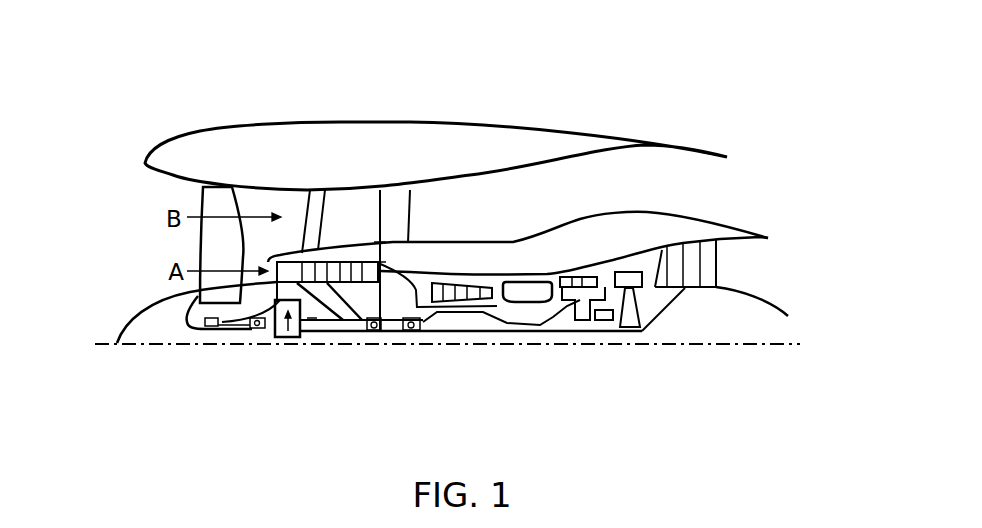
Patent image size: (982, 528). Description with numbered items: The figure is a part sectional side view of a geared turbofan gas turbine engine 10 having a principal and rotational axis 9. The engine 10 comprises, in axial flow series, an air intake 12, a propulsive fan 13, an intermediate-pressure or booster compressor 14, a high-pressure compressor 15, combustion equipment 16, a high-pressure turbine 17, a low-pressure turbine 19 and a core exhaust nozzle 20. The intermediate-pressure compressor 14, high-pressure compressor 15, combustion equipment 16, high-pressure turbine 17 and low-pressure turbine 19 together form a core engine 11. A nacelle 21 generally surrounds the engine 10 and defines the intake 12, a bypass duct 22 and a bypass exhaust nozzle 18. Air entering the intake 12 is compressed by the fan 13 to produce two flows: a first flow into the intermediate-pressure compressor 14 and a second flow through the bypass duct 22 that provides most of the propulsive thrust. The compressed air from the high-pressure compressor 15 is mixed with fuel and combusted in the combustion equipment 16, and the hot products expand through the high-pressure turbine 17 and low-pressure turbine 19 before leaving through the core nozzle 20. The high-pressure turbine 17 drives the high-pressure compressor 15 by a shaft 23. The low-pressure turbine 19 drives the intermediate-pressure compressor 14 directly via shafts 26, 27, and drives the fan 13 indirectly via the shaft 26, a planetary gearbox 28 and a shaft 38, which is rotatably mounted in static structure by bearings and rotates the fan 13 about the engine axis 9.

The principal and rotational axis 9 is at (689, 346).
The geared turbofan gas turbine engine 10 is at (181, 134).
The core engine 11 is at (514, 263).
The air intake 12 is at (167, 191).
The propulsive fan 13 is at (213, 245).
The intermediate-pressure compressor 14 is at (343, 265).
The high-pressure compressor 15 is at (467, 290).
The combustion equipment 16 is at (528, 296).
The high-pressure turbine 17 is at (577, 284).
The bypass exhaust nozzle 18 is at (707, 173).
The low-pressure turbine 19 is at (690, 253).
The core exhaust nozzle 20 is at (752, 264).
The nacelle 21 is at (412, 132).
The bypass duct 22 is at (617, 193).
The shaft 23 is at (540, 321).
The shaft 26 is at (457, 334).
The shaft 27 is at (338, 299).
The gearbox 28 is at (285, 336).
The shaft 38 is at (227, 328).